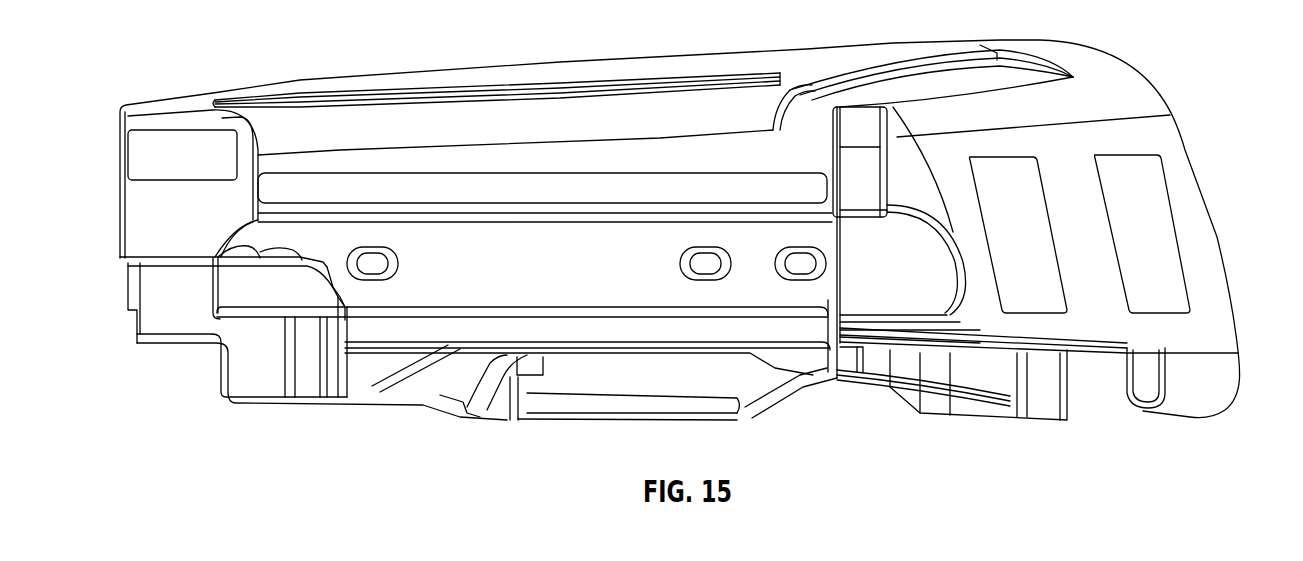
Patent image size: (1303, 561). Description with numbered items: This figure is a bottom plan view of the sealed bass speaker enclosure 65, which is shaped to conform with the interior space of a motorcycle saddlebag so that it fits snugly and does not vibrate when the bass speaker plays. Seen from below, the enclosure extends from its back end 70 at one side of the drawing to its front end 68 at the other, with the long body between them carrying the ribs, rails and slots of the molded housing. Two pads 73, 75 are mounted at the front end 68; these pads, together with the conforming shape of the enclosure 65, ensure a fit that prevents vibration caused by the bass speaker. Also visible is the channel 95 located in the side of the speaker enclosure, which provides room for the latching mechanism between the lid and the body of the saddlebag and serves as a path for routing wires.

The bass speaker enclosure 65 is at (1092, 54).
The front end 68 is at (1217, 235).
The back end 70 is at (122, 193).
The pad 73 is at (1050, 307).
The pad 75 is at (1160, 197).
The channel 95 is at (1127, 388).